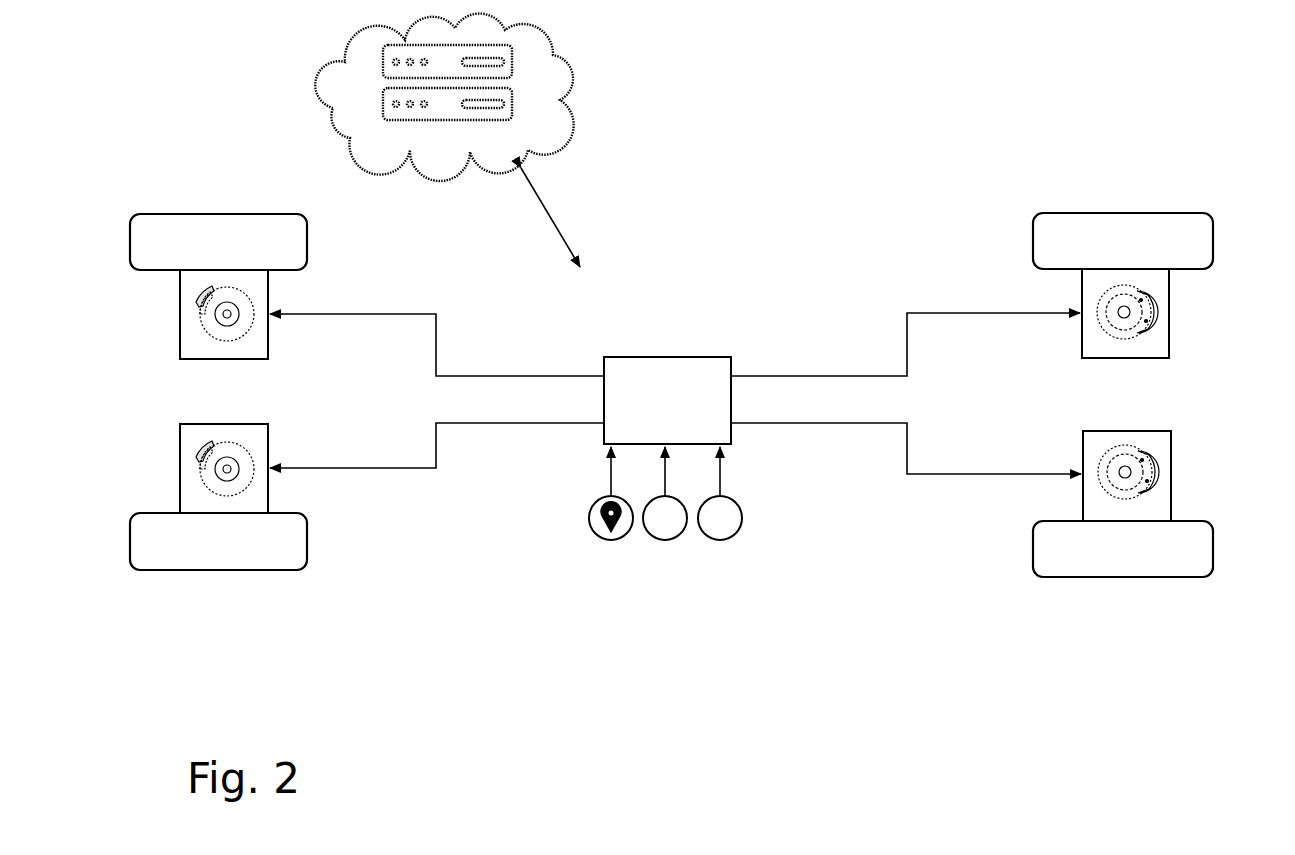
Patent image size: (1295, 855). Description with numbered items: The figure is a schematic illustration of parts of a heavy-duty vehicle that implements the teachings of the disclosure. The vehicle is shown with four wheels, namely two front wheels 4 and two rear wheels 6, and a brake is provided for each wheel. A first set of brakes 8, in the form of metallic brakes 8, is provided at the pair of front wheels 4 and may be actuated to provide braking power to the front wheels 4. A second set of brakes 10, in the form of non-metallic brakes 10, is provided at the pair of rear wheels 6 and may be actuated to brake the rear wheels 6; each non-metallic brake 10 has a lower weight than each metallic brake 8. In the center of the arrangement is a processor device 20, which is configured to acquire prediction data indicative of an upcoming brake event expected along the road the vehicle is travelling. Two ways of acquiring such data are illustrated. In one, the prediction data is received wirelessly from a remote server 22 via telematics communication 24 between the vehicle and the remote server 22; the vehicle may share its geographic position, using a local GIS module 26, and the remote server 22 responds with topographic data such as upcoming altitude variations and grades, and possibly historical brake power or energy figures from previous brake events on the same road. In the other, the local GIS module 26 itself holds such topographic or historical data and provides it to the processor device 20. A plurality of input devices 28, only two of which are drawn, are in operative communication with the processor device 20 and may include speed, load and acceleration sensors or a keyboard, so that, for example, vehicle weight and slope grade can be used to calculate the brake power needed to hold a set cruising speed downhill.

The front wheels 4 is at (1110, 213).
The rear wheels 6 is at (205, 213).
The metallic brakes 8 is at (1170, 305).
The non-metallic brakes 10 is at (180, 315).
The processor device 20 is at (648, 414).
The remote server 22 is at (515, 58).
The telematics communication 24 is at (548, 205).
The local GIS module 26 is at (589, 517).
The input devices 28 is at (666, 540).